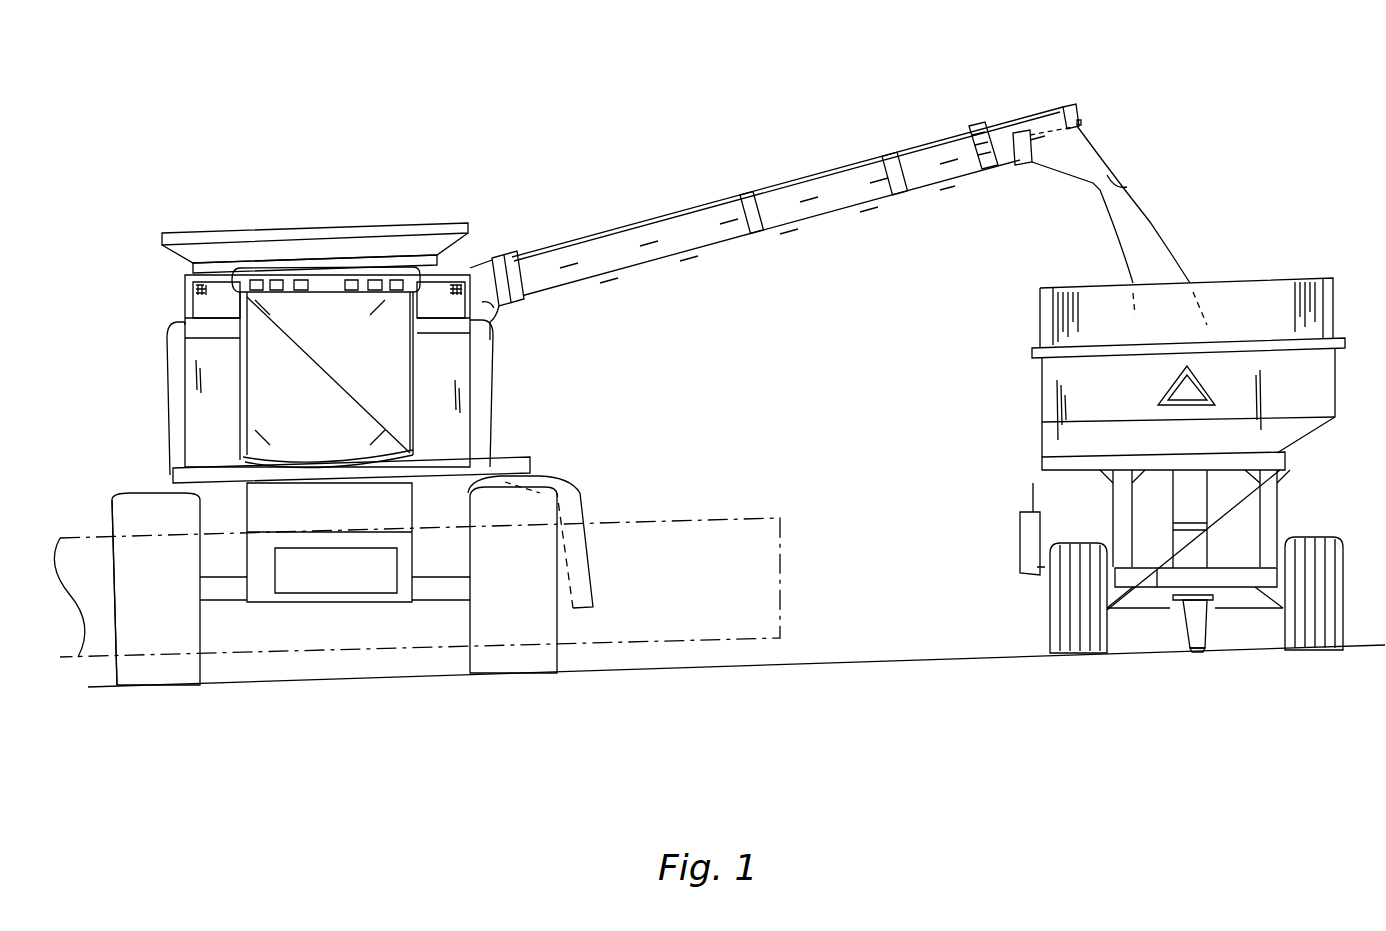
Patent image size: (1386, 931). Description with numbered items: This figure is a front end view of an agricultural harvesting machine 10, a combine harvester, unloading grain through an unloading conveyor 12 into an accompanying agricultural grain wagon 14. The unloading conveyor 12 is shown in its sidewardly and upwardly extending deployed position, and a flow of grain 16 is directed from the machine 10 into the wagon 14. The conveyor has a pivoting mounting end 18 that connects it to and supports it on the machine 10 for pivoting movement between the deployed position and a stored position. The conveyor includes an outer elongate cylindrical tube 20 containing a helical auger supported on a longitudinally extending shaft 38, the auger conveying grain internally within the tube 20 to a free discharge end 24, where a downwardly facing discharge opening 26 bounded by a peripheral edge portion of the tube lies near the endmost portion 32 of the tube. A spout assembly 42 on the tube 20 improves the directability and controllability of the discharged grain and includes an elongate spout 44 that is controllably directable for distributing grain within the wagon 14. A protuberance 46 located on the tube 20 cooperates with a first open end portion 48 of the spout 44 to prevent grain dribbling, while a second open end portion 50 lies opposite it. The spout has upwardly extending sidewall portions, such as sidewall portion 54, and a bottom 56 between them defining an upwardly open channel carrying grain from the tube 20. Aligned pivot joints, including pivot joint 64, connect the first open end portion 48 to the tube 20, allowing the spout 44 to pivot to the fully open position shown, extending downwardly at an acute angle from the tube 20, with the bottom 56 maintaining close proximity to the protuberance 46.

The agricultural harvesting machine 10 is at (363, 210).
The unloading conveyor 12 is at (771, 185).
The agricultural grain wagon 14 is at (1038, 390).
The flow of grain 16 is at (1167, 260).
The pivoting mounting end 18 is at (483, 262).
The outer elongate cylindrical tube 20 is at (662, 262).
The free discharge end 24 is at (1030, 113).
The discharge opening 26 is at (1048, 145).
The endmost portion 32 is at (1073, 102).
The longitudinally extending shaft 38 is at (1093, 115).
The spout assembly 42 is at (1067, 177).
The elongate spout 44 is at (1087, 180).
The protuberance 46 is at (1027, 165).
The first open end portion 48 is at (1025, 173).
The second open end portion 50 is at (1112, 175).
The sidewall portion 54 is at (1093, 162).
The bottom 56 is at (1048, 168).
The pivot joint 64 is at (1015, 125).